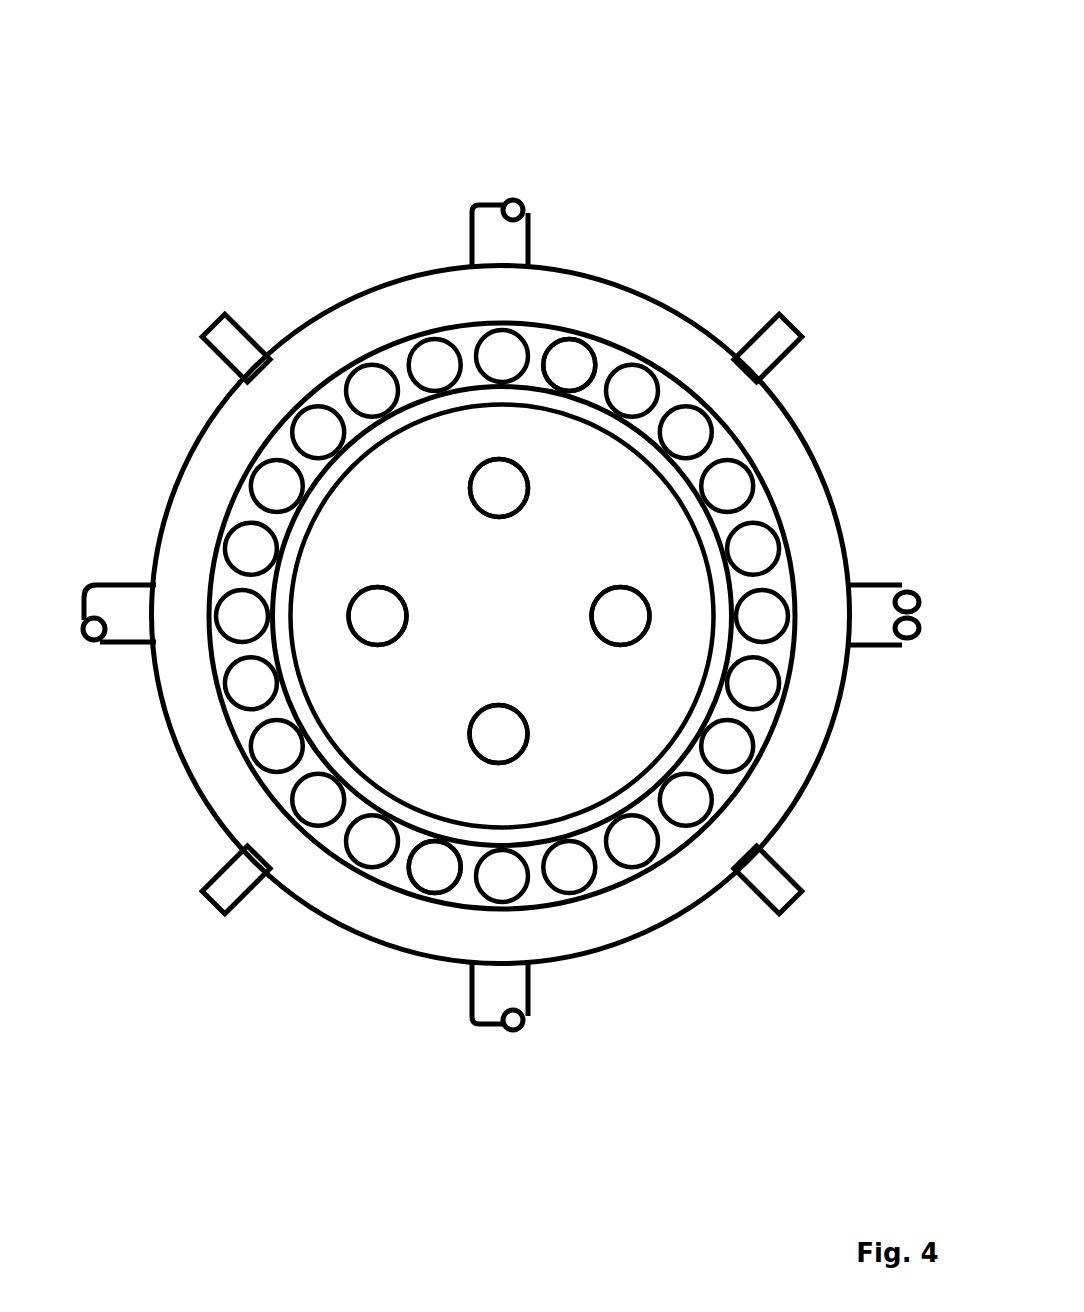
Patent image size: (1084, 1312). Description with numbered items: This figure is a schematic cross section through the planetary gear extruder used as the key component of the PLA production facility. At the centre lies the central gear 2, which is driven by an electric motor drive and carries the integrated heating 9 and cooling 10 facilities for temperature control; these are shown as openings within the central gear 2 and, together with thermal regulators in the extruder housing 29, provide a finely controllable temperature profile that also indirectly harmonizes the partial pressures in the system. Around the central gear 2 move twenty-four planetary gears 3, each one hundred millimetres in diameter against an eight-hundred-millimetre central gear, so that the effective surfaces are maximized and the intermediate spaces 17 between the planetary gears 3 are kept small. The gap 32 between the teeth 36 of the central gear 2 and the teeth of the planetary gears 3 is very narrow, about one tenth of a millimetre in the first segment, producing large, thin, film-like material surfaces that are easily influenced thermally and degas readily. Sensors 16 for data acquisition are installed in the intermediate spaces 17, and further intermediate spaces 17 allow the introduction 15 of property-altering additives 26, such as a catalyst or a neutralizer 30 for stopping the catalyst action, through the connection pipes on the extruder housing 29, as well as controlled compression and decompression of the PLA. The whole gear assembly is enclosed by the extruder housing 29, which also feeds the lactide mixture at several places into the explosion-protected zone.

The central gear 2 is at (386, 734).
The planetary gears 3 is at (265, 487).
The heating of the central gear and temperature control 9 is at (379, 617).
The cooling of the central gear and temperature control 10 is at (499, 611).
The introduction of additives 15 is at (513, 208).
The sensors for acquiring data 16 is at (222, 343).
The intermediate space 17 is at (792, 765).
The additives 26 is at (500, 160).
The extruder housing 29 is at (712, 332).
The neutralizer 30 is at (500, 1062).
The gap 32 is at (563, 388).
The teeth 36 is at (302, 711).